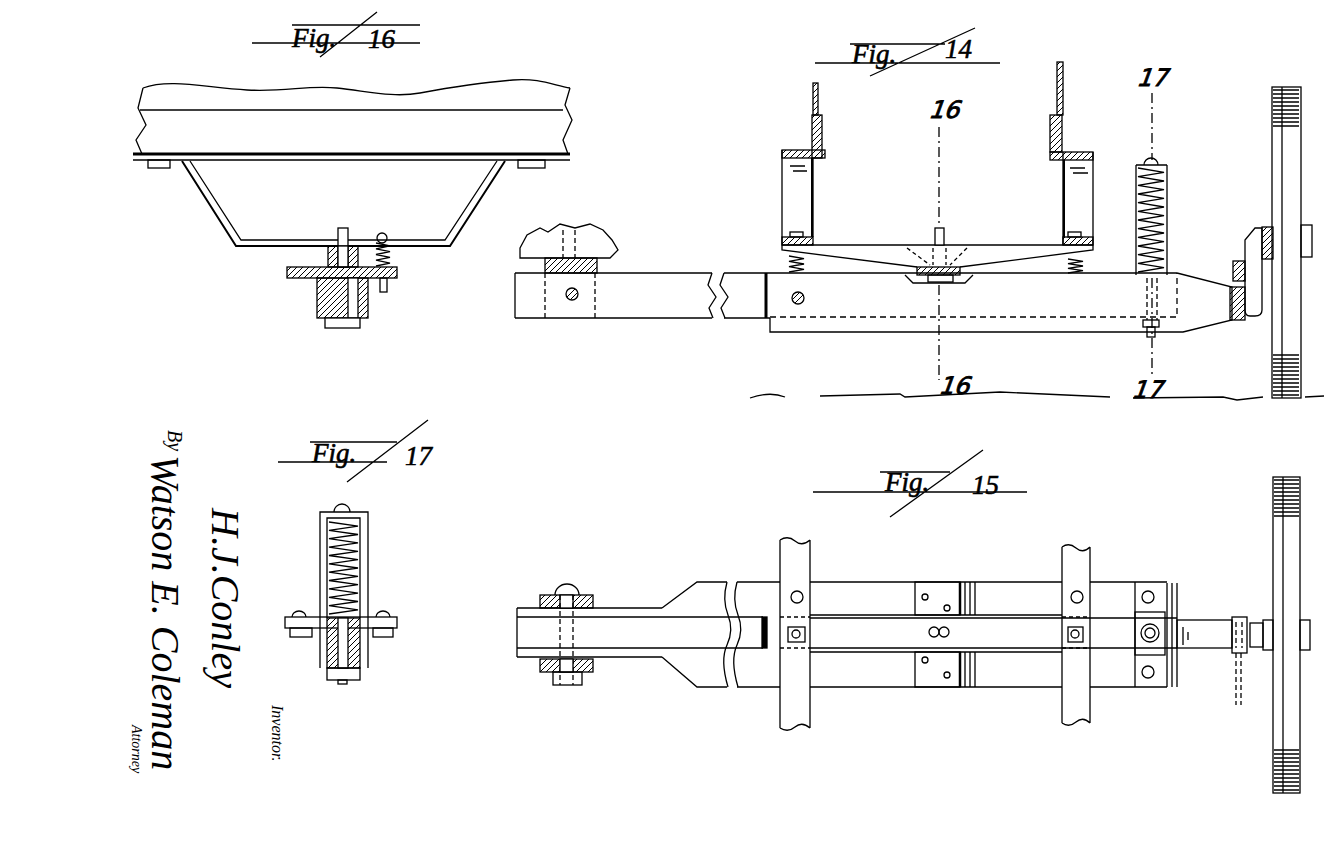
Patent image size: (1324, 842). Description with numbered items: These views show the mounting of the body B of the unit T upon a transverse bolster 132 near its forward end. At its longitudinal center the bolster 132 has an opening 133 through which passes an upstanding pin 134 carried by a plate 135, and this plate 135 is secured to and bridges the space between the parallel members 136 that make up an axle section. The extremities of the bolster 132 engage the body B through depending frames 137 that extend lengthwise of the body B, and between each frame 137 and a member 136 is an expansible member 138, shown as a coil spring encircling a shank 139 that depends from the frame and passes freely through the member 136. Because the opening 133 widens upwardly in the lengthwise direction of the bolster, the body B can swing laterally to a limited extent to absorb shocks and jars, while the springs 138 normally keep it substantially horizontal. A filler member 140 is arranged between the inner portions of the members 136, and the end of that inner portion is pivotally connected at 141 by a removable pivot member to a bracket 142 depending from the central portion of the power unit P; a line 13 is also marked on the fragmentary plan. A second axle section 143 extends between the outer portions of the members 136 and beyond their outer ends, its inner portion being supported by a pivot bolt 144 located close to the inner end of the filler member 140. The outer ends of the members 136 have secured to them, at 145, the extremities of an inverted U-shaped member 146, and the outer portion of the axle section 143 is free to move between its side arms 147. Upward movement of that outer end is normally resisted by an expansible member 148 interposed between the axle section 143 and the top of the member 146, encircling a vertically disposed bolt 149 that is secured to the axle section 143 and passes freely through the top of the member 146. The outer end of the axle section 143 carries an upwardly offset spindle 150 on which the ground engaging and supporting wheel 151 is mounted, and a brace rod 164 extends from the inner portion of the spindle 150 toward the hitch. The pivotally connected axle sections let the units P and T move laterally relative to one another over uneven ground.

In FIG. 15, the break line / frame section 13 is at (745, 583).
In FIG. 16, the bolster 132 is at (353, 328).
In FIG. 14, the bolster 132 is at (1012, 250).
In FIG. 15, the bolster 132 is at (1037, 630).
In FIG. 14, the opening 133 is at (905, 247).
In FIG. 15, the opening 133 is at (950, 632).
In FIG. 16, the upstanding pin 134 is at (341, 228).
In FIG. 14, the upstanding pin 134 is at (945, 233).
In FIG. 15, the upstanding pin 134 is at (928, 632).
In FIG. 16, the plate 135 is at (397, 268).
In FIG. 15, the plate 135 is at (932, 678).
In FIG. 16, the parallel members 136 is at (317, 302).
In FIG. 17, the parallel members 136 is at (327, 657).
In FIG. 15, the parallel members 136 is at (895, 595).
In FIG. 16, the depending frames 137 is at (217, 213).
In FIG. 14, the depending frames 137 is at (793, 190).
In FIG. 15, the depending frames 137 is at (788, 707).
In FIG. 16, the expansible member 138 is at (387, 257).
In FIG. 14, the expansible member 138 is at (787, 260).
In FIG. 16, the shank 139 is at (387, 288).
In FIG. 15, the shank 139 is at (803, 595).
In FIG. 14, the filler member 140 is at (655, 302).
In FIG. 15, the filler member 140 is at (528, 637).
In FIG. 14, the pivotal connection 141 is at (572, 302).
In FIG. 15, the pivotal connection 141 is at (567, 585).
In FIG. 14, the bracket 142 is at (600, 263).
In FIG. 15, the bracket 142 is at (593, 670).
In FIG. 16, the second axle section 143 is at (327, 328).
In FIG. 14, the second axle section 143 is at (1025, 313).
In FIG. 17, the second axle section 143 is at (325, 678).
In FIG. 15, the second axle section 143 is at (1220, 620).
In FIG. 14, the pivot bolt 144 is at (805, 298).
In FIG. 17, the securing point 145 is at (302, 615).
In FIG. 15, the securing point 145 is at (1150, 591).
In FIG. 17, the inverted U-shaped member 146 is at (377, 613).
In FIG. 15, the inverted U-shaped member 146 is at (1145, 678).
In FIG. 14, the side arms 147 is at (1151, 216).
In FIG. 17, the side arms 147 is at (368, 537).
In FIG. 15, the side arms 147 is at (1141, 633).
In FIG. 17, the expansible member 148 is at (328, 575).
In FIG. 15, the expansible member 148 is at (1177, 623).
In FIG. 17, the bolt 149 is at (342, 650).
In FIG. 14, the spindle 150 is at (1258, 238).
In FIG. 15, the spindle 150 is at (1258, 653).
In FIG. 14, the wheel 151 is at (1285, 117).
In FIG. 15, the wheel 151 is at (1283, 473).
In FIG. 14, the brace rod 164 is at (1238, 260).
In FIG. 16, the unit T is at (519, 76).
In FIG. 14, the unit T is at (798, 117).
In FIG. 14, the power unit P is at (595, 238).
In FIG. 14, the body B is at (1041, 140).